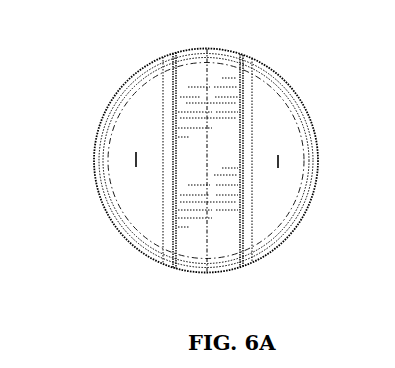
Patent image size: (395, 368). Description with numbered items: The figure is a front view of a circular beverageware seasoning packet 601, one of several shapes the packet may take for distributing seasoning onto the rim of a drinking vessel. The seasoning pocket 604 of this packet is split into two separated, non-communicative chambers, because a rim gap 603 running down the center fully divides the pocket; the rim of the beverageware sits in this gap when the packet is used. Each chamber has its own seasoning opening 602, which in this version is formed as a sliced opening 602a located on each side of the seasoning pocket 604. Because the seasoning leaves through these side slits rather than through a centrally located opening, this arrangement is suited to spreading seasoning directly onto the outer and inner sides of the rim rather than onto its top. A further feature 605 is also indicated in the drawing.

The beverageware seasoning packet 601 is at (388, 48).
The seasoning opening 602 is at (278, 162).
The sliced opening 602a is at (136, 160).
The rim gap 603 is at (247, 51).
The seasoning pocket 604 is at (142, 89).
The porous media 605 is at (188, 248).